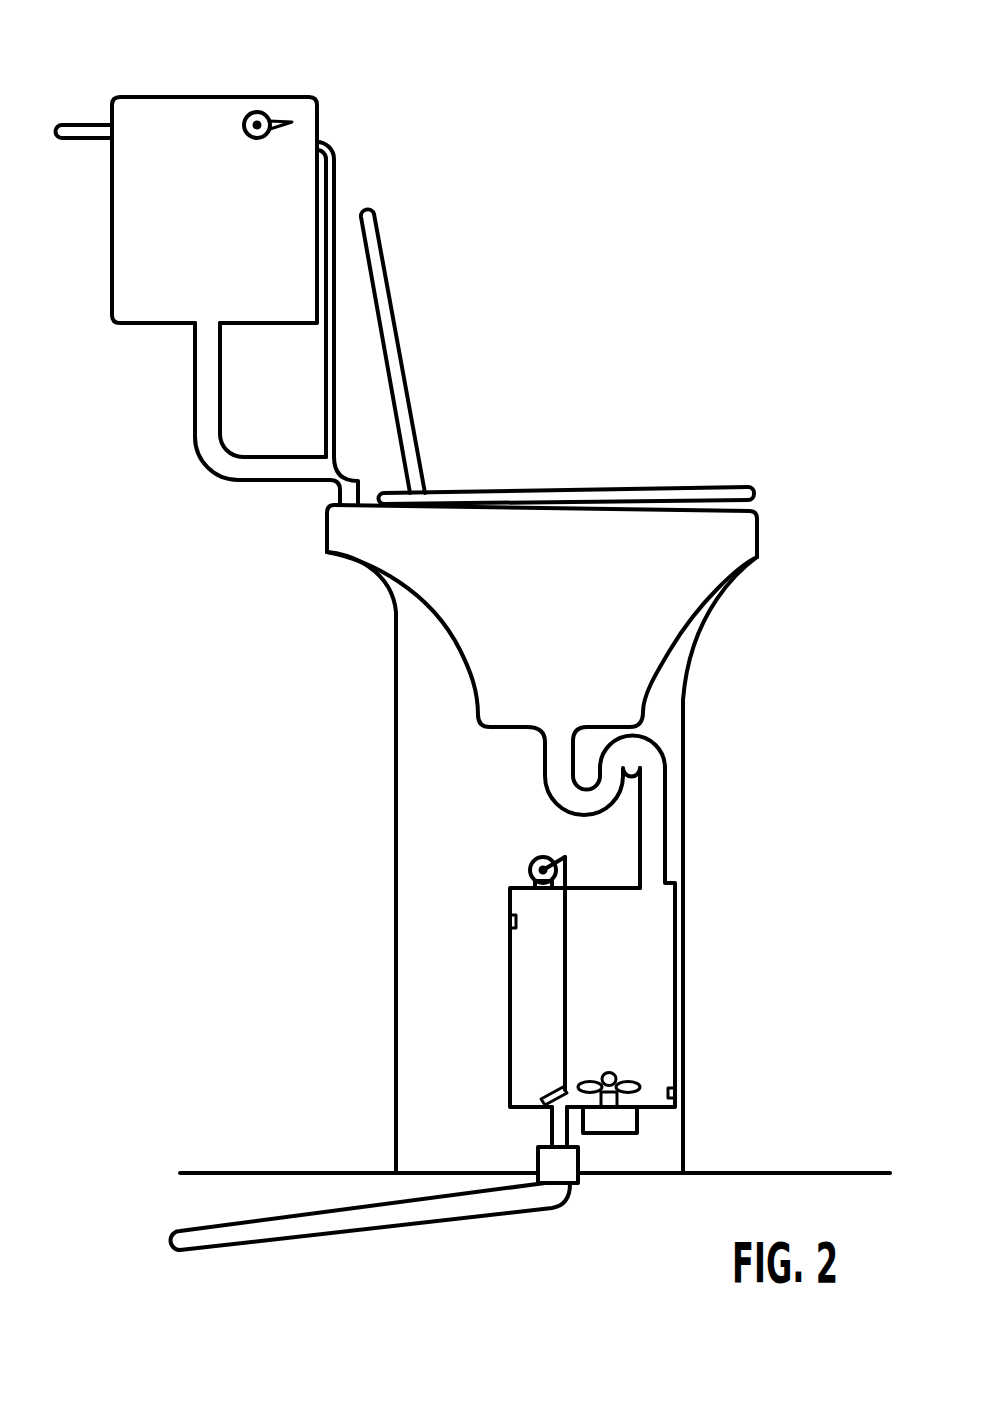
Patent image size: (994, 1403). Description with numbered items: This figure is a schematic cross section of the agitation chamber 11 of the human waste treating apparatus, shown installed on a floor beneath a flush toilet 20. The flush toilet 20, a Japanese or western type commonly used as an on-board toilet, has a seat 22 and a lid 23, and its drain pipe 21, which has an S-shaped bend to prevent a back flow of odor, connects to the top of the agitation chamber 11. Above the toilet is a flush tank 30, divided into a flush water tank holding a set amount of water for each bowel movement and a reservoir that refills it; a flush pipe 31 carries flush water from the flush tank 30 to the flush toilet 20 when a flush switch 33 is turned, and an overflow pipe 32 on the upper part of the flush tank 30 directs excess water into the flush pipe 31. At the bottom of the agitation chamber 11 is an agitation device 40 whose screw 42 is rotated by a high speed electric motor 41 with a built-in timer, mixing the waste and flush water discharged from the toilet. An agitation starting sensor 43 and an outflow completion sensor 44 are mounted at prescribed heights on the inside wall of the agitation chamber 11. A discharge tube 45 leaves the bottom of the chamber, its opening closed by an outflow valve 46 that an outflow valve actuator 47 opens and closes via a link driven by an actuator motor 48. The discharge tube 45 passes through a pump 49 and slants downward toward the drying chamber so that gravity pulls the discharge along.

The agitation chamber 11 is at (675, 920).
The flush toilet 20 is at (760, 513).
The drain pipe 21 is at (667, 780).
The seat 22 is at (597, 488).
The lid 23 is at (392, 297).
The flush tank 30 is at (176, 97).
The flush pipe 31 is at (195, 400).
The overflow pipe 32 is at (336, 160).
The flush switch 33 is at (258, 112).
The agitation device 40 is at (679, 1045).
The electric motor 41 is at (637, 1120).
The screw 42 is at (633, 1080).
The agitation starting sensor 43 is at (510, 927).
The outflow completion sensor 44 is at (680, 1093).
The discharge tube 45 is at (535, 1210).
The outflow valve 46 is at (547, 1097).
The outflow valve actuator 47 is at (565, 1032).
The actuator motor 48 is at (530, 865).
The pump 49 is at (580, 1185).